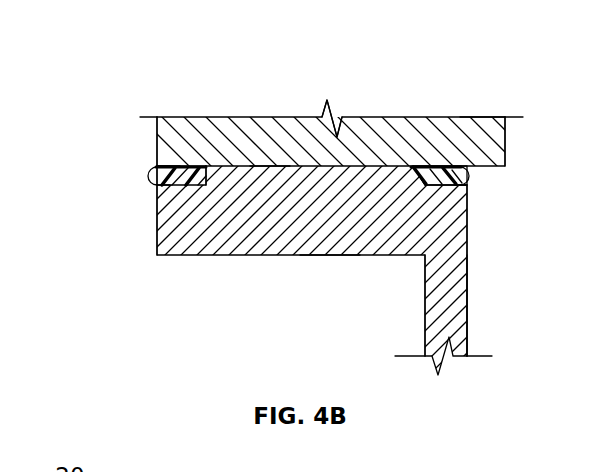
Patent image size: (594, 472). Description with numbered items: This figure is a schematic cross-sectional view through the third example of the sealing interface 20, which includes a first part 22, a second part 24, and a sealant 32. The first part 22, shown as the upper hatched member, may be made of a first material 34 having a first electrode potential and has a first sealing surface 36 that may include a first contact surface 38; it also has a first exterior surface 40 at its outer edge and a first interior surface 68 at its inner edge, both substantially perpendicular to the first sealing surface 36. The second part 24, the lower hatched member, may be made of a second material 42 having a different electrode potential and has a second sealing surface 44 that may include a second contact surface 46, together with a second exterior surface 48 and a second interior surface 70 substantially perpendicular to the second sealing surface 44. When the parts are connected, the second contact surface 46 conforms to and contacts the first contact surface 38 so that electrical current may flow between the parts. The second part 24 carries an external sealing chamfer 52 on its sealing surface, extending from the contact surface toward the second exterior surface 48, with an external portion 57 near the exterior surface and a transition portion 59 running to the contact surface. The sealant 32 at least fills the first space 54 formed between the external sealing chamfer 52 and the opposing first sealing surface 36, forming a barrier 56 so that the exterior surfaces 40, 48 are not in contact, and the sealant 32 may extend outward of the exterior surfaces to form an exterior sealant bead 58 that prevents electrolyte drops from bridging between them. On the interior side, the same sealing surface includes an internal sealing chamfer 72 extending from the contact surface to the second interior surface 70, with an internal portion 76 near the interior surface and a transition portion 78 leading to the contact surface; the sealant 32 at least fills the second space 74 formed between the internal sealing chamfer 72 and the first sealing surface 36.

The sealing interface 20 is at (205, 65).
The first part 22 is at (345, 117).
The second part 24 is at (260, 255).
The sealant 32 is at (470, 180).
The first material 34 is at (475, 147).
The first sealing surface 36 is at (231, 166).
The first contact surface 38 is at (345, 167).
The first exterior surface 40 is at (157, 138).
The second material 42 is at (444, 322).
The second sealing surface 44 is at (262, 167).
The second contact surface 46 is at (285, 167).
The second exterior surface 48 is at (157, 237).
The external sealing chamfer 52 is at (200, 167).
The first space 54 is at (156, 166).
The barrier 56 is at (152, 174).
The external portion 57 is at (175, 167).
The exterior sealant bead 58 is at (152, 180).
The transition portion 59 is at (197, 177).
The first interior surface 68 is at (505, 143).
The second interior surface 70 is at (467, 265).
The internal sealing chamfer 72 is at (437, 180).
The second space 74 is at (470, 173).
The internal portion 76 is at (455, 166).
The transition portion 78 is at (426, 166).